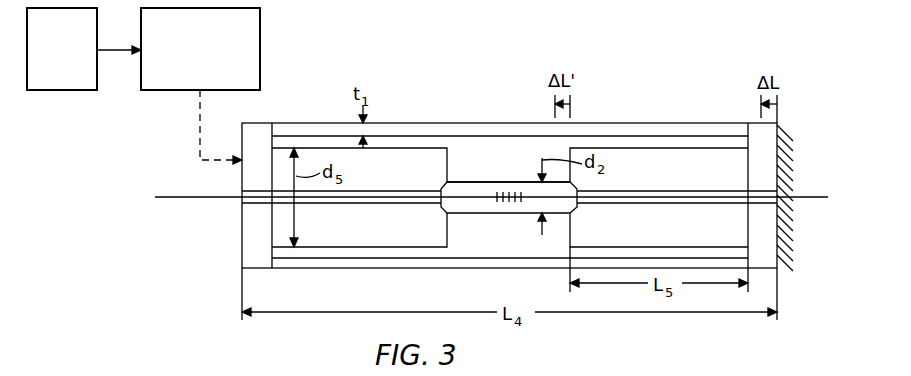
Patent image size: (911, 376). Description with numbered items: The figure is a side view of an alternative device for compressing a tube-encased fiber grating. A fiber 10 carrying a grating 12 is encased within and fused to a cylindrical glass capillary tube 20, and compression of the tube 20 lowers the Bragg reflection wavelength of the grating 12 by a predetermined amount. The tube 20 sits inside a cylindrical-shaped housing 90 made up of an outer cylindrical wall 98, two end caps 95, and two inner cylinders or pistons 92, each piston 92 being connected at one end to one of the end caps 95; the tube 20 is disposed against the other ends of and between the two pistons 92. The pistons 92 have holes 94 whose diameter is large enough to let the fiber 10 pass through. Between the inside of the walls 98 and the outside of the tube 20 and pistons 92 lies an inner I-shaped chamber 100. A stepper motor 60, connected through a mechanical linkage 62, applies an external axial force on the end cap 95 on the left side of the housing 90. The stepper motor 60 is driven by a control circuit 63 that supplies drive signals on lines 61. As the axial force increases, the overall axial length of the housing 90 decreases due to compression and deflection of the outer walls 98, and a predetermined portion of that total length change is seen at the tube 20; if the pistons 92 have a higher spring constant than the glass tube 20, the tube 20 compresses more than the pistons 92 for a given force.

The fiber 10 is at (183, 198).
The grating 12 is at (511, 205).
The cylindrical glass capillary tube 20 is at (467, 176).
The stepper motor 60 is at (260, 32).
The lines 61 is at (121, 47).
The mechanical linkage 62 is at (200, 122).
The control circuit 63 is at (70, 90).
The cylindrical-shaped housing 90 is at (328, 113).
The inner cylinders (pistons) 92 is at (426, 181).
The holes 94 is at (338, 204).
The end caps 95 is at (250, 252).
The outer cylindrical wall 98 is at (485, 125).
The inner I-shaped chamber 100 is at (513, 171).